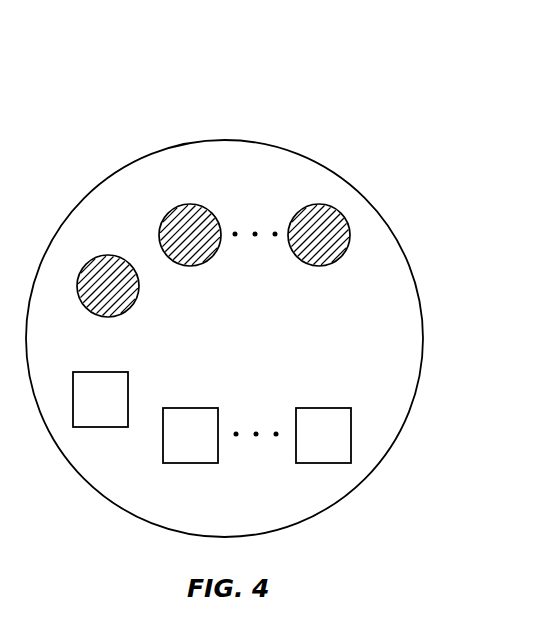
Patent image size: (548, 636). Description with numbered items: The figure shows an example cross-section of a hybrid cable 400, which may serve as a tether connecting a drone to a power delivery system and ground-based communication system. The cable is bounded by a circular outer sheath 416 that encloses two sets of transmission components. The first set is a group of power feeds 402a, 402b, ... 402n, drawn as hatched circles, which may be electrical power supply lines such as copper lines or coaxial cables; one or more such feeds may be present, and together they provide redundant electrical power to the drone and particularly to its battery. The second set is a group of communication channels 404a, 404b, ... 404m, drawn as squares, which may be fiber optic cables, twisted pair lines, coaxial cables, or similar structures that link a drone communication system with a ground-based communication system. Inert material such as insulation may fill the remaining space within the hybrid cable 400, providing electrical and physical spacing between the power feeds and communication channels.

The hybrid cable 400 is at (59, 74).
The outer sheath 416 is at (398, 237).
The power feed 402a is at (120, 255).
The power feed 402b is at (195, 267).
The power feed 402n is at (322, 266).
The communication channel 404a is at (110, 427).
The communication channel 404b is at (185, 408).
The communication channel 404m is at (318, 408).